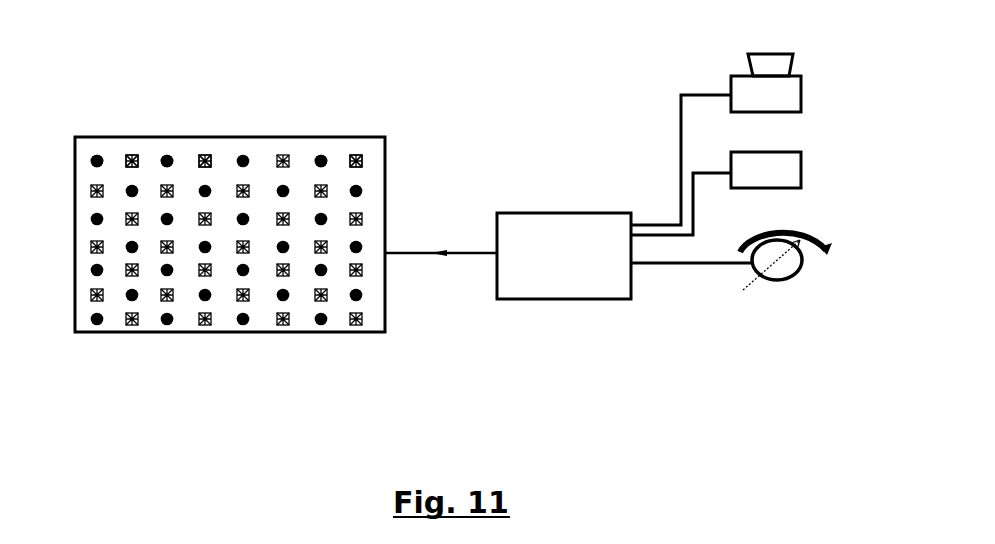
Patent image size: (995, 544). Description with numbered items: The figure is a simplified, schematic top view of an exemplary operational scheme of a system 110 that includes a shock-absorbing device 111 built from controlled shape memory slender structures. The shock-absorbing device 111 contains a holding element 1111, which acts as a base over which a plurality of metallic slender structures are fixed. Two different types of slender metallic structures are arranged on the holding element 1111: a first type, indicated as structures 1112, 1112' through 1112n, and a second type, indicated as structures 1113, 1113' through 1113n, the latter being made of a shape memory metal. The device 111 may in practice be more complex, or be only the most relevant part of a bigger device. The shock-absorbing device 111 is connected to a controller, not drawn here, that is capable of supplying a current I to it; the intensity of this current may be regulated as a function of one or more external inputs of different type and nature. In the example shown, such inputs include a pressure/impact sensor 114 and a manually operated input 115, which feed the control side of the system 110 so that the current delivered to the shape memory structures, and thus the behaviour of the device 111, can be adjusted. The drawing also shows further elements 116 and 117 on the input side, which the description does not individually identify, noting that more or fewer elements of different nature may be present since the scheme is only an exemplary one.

The system 110 is at (580, 120).
The shock-absorbing device 111 is at (396, 137).
The holding element 1111 is at (187, 331).
The slender metallic structure 1112 is at (101, 112).
The slender metallic structure 1113 is at (144, 123).
The slender metallic structure 1112' is at (209, 116).
The slender metallic structure 1113' is at (252, 126).
The slender metallic structure 1112n is at (327, 153).
The slender metallic structure 1113n is at (358, 165).
The pressure/impact sensor 114 is at (550, 300).
The manually operated input 115 is at (770, 62).
The communication module 116 is at (765, 187).
The rotary knob / dial 117 is at (763, 282).